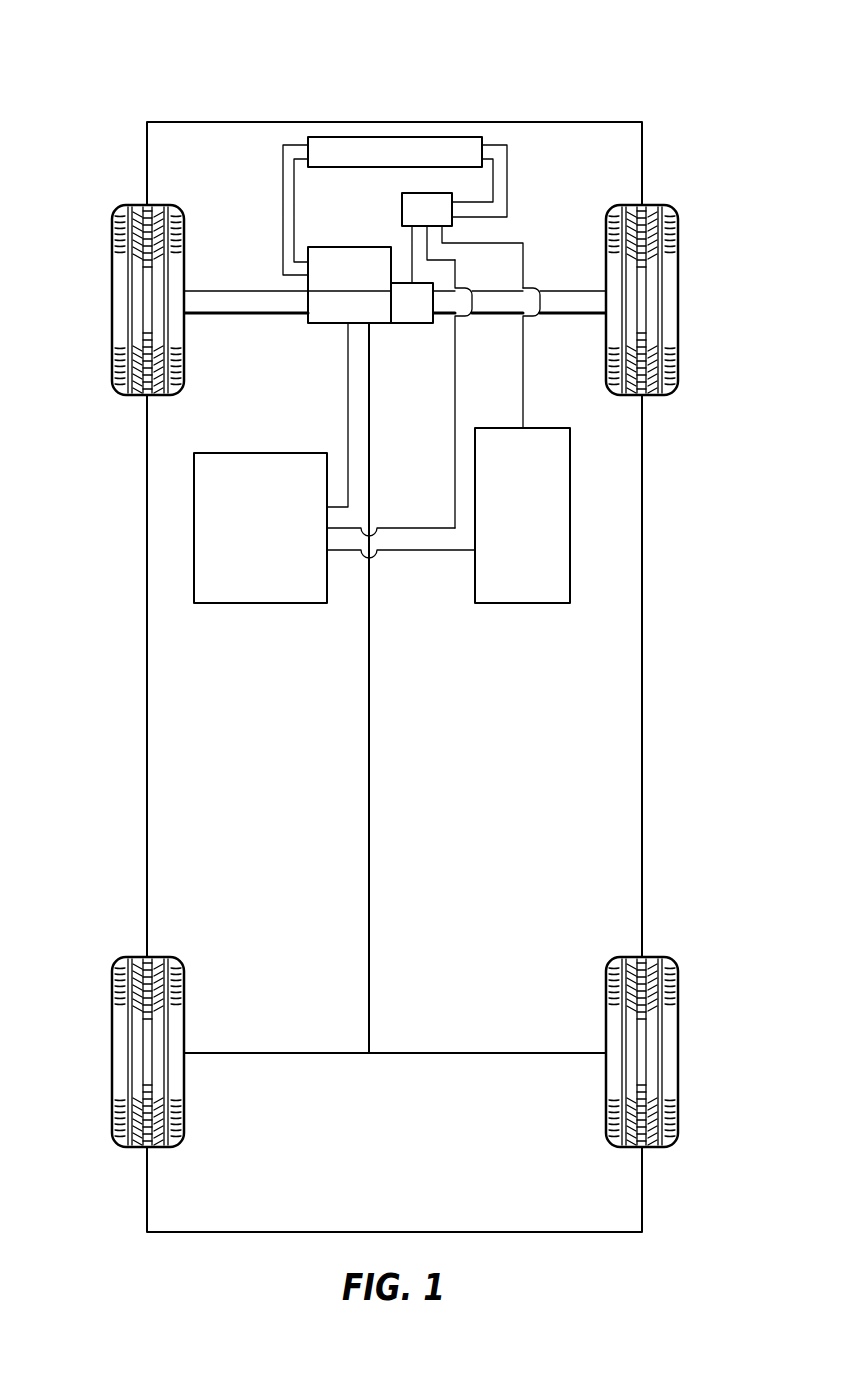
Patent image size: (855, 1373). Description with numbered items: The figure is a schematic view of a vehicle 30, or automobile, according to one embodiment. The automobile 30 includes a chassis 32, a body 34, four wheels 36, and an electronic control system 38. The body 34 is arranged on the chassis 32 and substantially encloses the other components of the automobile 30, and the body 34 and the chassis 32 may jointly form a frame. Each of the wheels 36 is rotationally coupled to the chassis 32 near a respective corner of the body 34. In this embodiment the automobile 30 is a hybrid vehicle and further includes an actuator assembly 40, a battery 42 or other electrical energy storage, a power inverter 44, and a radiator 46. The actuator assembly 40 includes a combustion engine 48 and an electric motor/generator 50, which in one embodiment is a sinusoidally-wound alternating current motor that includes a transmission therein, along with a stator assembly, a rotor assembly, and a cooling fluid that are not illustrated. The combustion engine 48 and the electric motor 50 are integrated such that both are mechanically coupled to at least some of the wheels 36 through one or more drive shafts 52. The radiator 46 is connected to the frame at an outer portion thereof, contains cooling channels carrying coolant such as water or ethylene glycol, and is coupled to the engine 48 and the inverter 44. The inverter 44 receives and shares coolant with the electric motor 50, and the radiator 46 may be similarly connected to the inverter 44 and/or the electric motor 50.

The vehicle 30 is at (392, 620).
The chassis 32 is at (368, 698).
The body 34 is at (146, 503).
The wheels 36 is at (112, 270).
The electronic control system 38 is at (271, 538).
The actuator assembly 40 is at (389, 336).
The battery 42 is at (539, 536).
The power inverter 44 is at (440, 223).
The radiator 46 is at (343, 137).
The combustion engine 48 is at (363, 283).
The electric motor/generator 50 is at (426, 315).
The drive shafts 52 is at (245, 291).